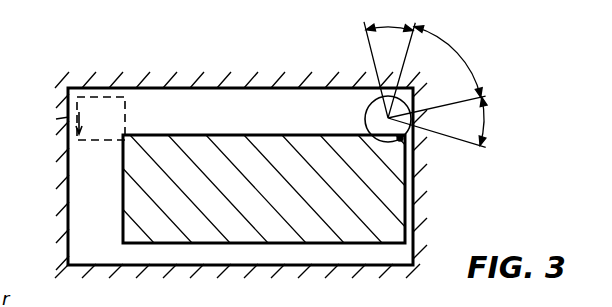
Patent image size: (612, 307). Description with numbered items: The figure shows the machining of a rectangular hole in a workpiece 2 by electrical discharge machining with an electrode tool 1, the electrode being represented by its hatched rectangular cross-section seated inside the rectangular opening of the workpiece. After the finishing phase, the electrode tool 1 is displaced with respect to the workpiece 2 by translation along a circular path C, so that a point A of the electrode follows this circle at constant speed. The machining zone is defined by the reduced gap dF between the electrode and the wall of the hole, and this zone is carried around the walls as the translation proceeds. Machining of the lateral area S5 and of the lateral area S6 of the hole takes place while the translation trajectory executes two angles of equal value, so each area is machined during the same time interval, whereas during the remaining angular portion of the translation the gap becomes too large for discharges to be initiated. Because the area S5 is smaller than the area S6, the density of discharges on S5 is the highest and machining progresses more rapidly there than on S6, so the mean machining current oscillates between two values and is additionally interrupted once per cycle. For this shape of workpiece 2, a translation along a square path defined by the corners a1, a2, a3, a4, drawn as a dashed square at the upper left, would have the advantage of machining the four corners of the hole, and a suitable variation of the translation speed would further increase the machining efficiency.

The electrode tool 1 is at (198, 145).
The workpiece 2 is at (170, 76).
The square path corner a1 is at (136, 116).
The square path corner a2 is at (101, 118).
The square path corner a3 is at (53, 119).
The square path corner a4 is at (88, 144).
The machined area S5 is at (410, 193).
The machined area S6 is at (287, 93).
The circular path C is at (365, 118).
The reduced gap dF is at (389, 94).
The point of the electrode A is at (400, 140).